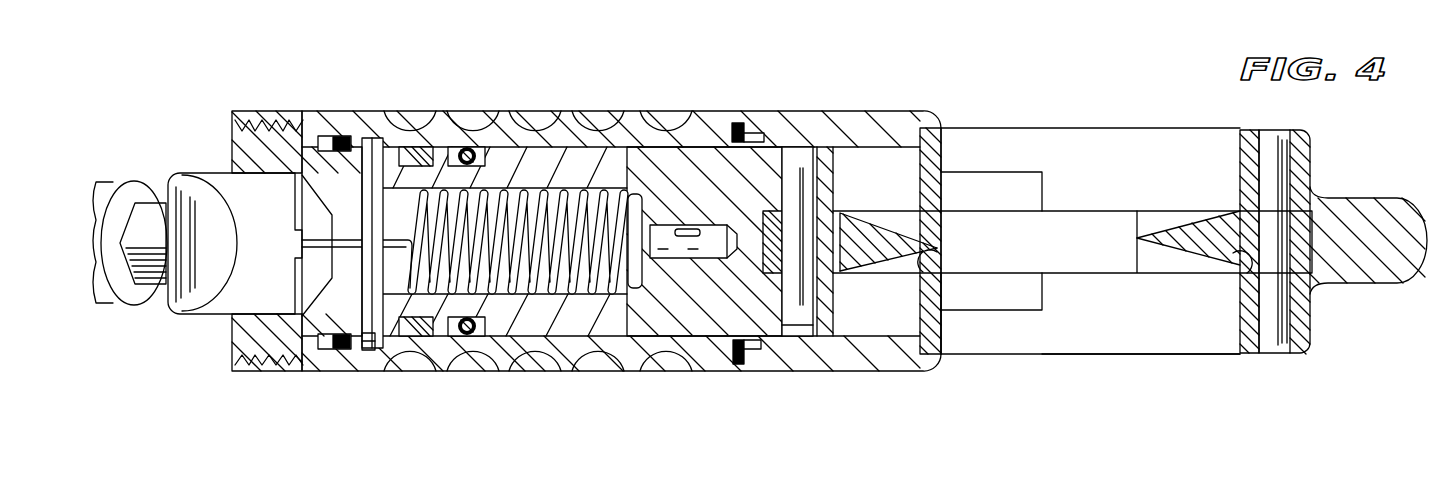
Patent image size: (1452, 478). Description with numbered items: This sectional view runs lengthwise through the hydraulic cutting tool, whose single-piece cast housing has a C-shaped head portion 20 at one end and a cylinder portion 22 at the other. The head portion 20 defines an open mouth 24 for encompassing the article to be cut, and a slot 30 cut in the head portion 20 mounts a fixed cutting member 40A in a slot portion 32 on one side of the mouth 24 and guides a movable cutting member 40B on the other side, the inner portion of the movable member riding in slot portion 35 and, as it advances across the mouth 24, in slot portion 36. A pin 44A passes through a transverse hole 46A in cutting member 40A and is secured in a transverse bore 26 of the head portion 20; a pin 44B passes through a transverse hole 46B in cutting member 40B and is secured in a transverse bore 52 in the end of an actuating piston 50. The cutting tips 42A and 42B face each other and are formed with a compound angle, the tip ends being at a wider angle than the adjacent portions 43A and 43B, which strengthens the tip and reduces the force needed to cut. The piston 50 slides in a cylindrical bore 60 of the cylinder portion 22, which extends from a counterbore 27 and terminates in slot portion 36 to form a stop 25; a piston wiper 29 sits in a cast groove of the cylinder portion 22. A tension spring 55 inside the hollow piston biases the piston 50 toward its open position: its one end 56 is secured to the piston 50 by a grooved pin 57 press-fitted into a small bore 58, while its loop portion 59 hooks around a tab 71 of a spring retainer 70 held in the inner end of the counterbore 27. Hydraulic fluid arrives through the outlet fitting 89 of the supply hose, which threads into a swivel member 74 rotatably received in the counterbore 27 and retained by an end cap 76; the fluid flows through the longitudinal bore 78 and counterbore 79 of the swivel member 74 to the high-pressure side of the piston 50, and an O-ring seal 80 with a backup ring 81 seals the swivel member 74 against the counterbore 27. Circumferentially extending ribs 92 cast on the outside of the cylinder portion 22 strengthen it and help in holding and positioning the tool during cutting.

The head portion 20 is at (1213, 358).
The cylinder portion 22 is at (768, 373).
The open mouth 24 is at (1153, 155).
The stop 25 is at (1030, 172).
The transverse bore 26 is at (1273, 145).
The counterbore 27 is at (355, 135).
The piston wiper 29 is at (743, 122).
The slot 30 is at (1333, 285).
The slot portion 32 is at (1233, 262).
The slot portion 35 is at (883, 217).
The slot portion 36 is at (1035, 275).
The first cutting member 40A is at (1190, 205).
The second cutting member 40B is at (920, 170).
The cutting tip 42A is at (1138, 240).
The cutting tip 42B is at (943, 237).
The adjacent portion 43A is at (1165, 268).
The adjacent portion 43B is at (943, 268).
The pin 44A is at (1285, 358).
The pin 44B is at (845, 336).
The transverse hole 46A is at (1280, 243).
The transverse hole 46B is at (835, 287).
The actuating piston 50 is at (687, 133).
The transverse bore 52 is at (795, 140).
The tension spring 55 is at (512, 190).
The spring end 56 is at (632, 336).
The grooved pin 57 is at (697, 260).
The small bore 58 is at (690, 236).
The loop portion 59 is at (330, 260).
The cylindrical bore 60 is at (990, 310).
The spring retainer 70 is at (376, 140).
The tab 71 is at (388, 357).
The swivel member 74 is at (215, 140).
The end cap 76 is at (232, 345).
The longitudinal bore 78 is at (292, 233).
The counterbore 79 is at (308, 135).
The O-ring seal 80 is at (338, 349).
The backup ring 81 is at (325, 349).
The outlet fitting 89 is at (155, 210).
The circumferentially extending ribs 92 is at (640, 111).